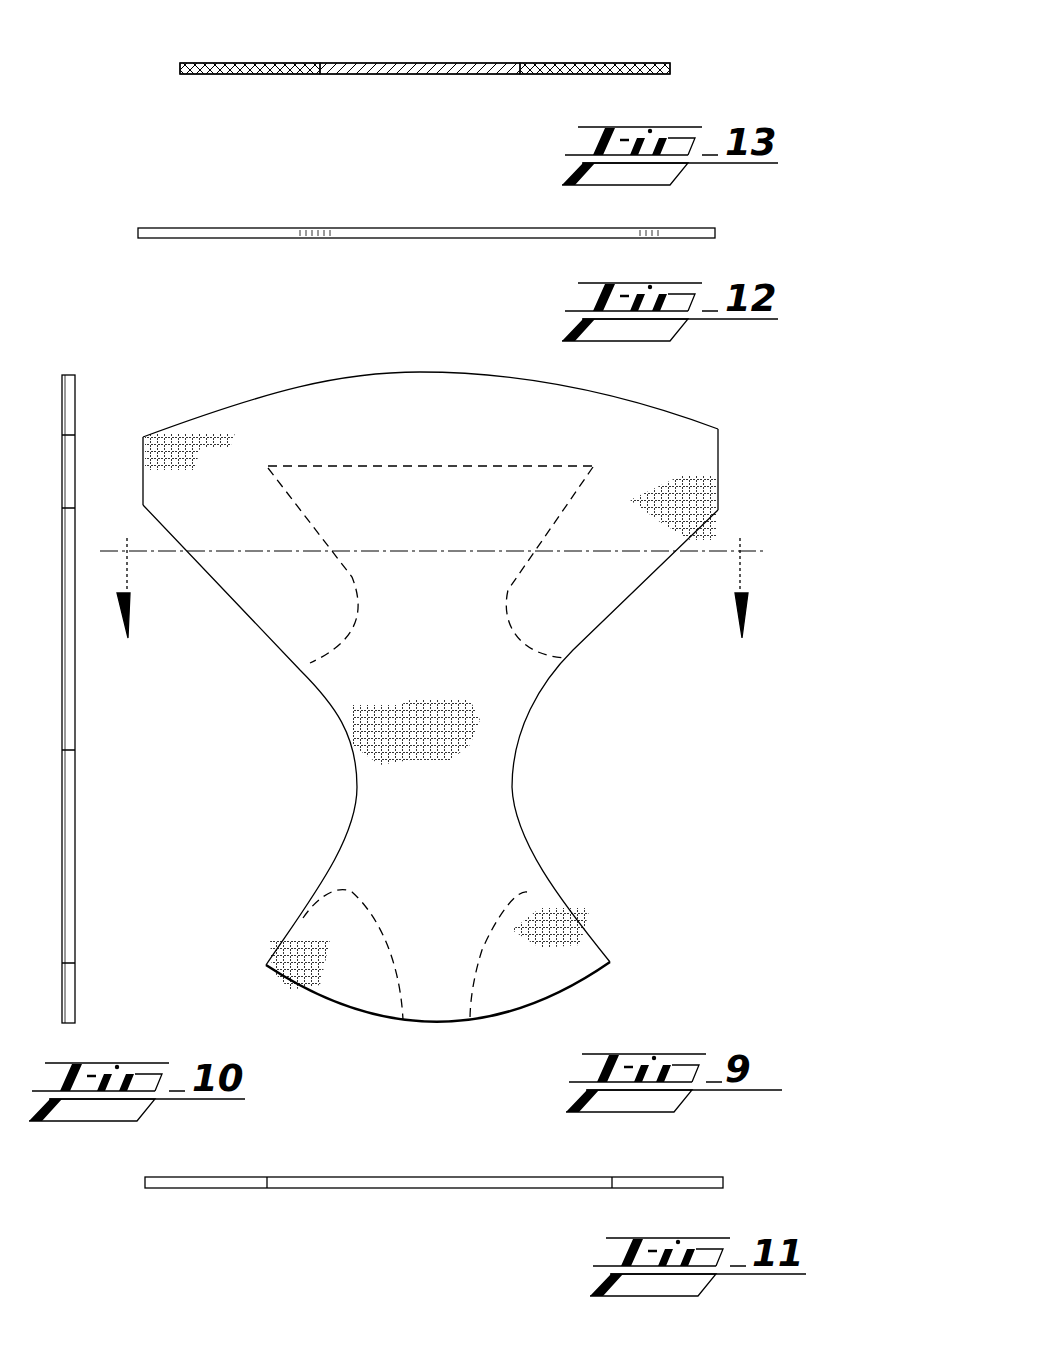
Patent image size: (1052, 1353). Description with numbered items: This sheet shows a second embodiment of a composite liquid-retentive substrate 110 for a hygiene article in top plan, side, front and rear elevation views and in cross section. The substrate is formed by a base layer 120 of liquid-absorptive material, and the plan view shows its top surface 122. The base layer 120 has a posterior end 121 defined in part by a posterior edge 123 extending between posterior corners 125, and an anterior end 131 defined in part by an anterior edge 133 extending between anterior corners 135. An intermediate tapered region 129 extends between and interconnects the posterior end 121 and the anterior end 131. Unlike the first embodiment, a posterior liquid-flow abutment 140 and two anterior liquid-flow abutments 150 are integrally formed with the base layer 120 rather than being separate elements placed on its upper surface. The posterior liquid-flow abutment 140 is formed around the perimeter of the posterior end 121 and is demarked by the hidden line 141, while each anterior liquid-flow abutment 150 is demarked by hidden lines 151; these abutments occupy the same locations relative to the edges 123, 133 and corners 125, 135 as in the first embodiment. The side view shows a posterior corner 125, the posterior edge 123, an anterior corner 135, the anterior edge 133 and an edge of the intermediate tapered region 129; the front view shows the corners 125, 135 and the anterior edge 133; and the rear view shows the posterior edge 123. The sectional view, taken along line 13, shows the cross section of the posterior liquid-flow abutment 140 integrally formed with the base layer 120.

In FIG. 13, the composite liquid-retentive substrate 110 is at (420, 78).
In FIG. 12, the composite liquid-retentive substrate 110 is at (122, 233).
In FIG. 10, the composite liquid-retentive substrate 110 is at (113, 688).
In FIG. 9, the composite liquid-retentive substrate 110 is at (672, 752).
In FIG. 11, the composite liquid-retentive substrate 110 is at (398, 1205).
In FIG. 13, the base layer 120 is at (672, 72).
In FIG. 12, the base layer 120 is at (718, 233).
In FIG. 10, the base layer 120 is at (63, 374).
In FIG. 9, the base layer 120 is at (505, 707).
In FIG. 11, the base layer 120 is at (142, 1192).
In FIG. 9, the posterior end 121 is at (623, 388).
In FIG. 9, the top surface 122 is at (450, 651).
In FIG. 12, the posterior edge 123 is at (412, 227).
In FIG. 10, the posterior edge 123 is at (62, 407).
In FIG. 9, the posterior edge 123 is at (420, 373).
In FIG. 10, the posterior corners 125 is at (60, 463).
In FIG. 9, the posterior corners 125 is at (142, 472).
In FIG. 11, the posterior corners 125 is at (143, 1184).
In FIG. 10, the intermediate tapered region 129 is at (76, 751).
In FIG. 9, the intermediate tapered region 129 is at (353, 770).
In FIG. 9, the anterior end 131 is at (335, 1025).
In FIG. 10, the anterior edge 133 is at (76, 997).
In FIG. 9, the anterior edge 133 is at (440, 1024).
In FIG. 11, the anterior edge 133 is at (455, 1190).
In FIG. 10, the anterior corners 135 is at (61, 963).
In FIG. 9, the anterior corners 135 is at (262, 965).
In FIG. 11, the anterior corners 135 is at (267, 1185).
In FIG. 13, the posterior liquid-flow abutment 140 is at (618, 63).
In FIG. 9, the posterior liquid-flow abutment 140 is at (330, 407).
In FIG. 9, the hidden line 141 is at (404, 466).
In FIG. 9, the anterior liquid-flow abutments 150 is at (297, 917).
In FIG. 9, the hidden lines 151 is at (357, 900).
In FIG. 9, the section line 13- 13 is at (435, 574).